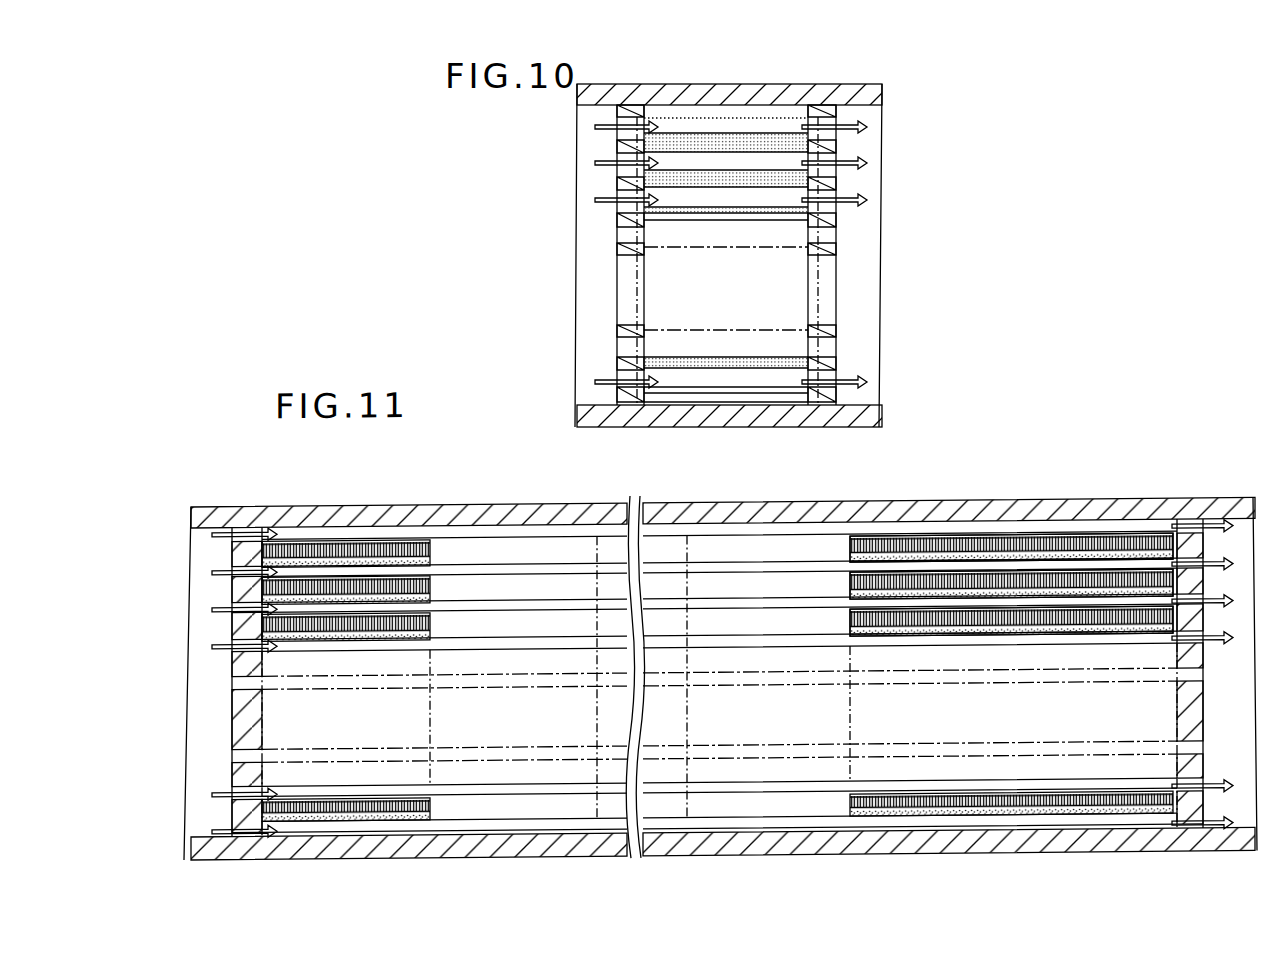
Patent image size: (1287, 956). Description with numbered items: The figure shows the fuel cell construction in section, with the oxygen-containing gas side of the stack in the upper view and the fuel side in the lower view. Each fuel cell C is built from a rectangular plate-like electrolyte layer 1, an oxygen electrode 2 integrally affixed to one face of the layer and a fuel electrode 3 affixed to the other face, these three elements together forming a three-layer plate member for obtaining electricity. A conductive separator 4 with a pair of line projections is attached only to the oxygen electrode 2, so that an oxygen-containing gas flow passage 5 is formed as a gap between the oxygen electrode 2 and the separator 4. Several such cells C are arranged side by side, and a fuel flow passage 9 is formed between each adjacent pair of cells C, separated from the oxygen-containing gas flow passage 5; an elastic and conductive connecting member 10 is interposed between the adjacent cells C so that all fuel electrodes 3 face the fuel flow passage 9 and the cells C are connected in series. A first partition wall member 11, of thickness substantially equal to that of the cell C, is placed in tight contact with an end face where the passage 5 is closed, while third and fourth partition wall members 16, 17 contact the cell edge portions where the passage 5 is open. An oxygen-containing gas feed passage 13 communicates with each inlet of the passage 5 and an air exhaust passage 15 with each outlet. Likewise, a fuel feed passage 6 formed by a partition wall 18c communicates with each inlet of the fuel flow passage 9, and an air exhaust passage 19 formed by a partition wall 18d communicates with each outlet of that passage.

In FIG. 11, the electrolyte layer 1 is at (850, 560).
In FIG. 11, the oxygen electrode 2 is at (870, 540).
In FIG. 11, the fuel electrode 3 is at (855, 567).
In FIG. 11, the separator 4 is at (908, 540).
In FIG. 10, the oxygen-containing gas flow passage 5 is at (784, 160).
In FIG. 11, the oxygen-containing gas flow passage 5 is at (1130, 648).
In FIG. 11, the fuel feed passage 6 is at (226, 682).
In FIG. 10, the fuel flow passage 9 is at (722, 187).
In FIG. 11, the fuel flow passage 9 is at (1125, 612).
In FIG. 11, the connecting member 10 is at (1062, 648).
In FIG. 11, the first partition wall member 11 is at (1188, 543).
In FIG. 10, the oxygen-containing gas feed passage 13 is at (610, 255).
In FIG. 10, the air exhaust passage 15 is at (846, 255).
In FIG. 10, the third partition wall member 16 is at (641, 105).
In FIG. 10, the fourth partition wall member 17 is at (825, 105).
In FIG. 11, the partition wall 18c is at (204, 545).
In FIG. 11, the partition wall 18d is at (1240, 843).
In FIG. 11, the air exhaust passage 19 is at (1215, 673).
In FIG. 11, the fuel cell C is at (443, 538).